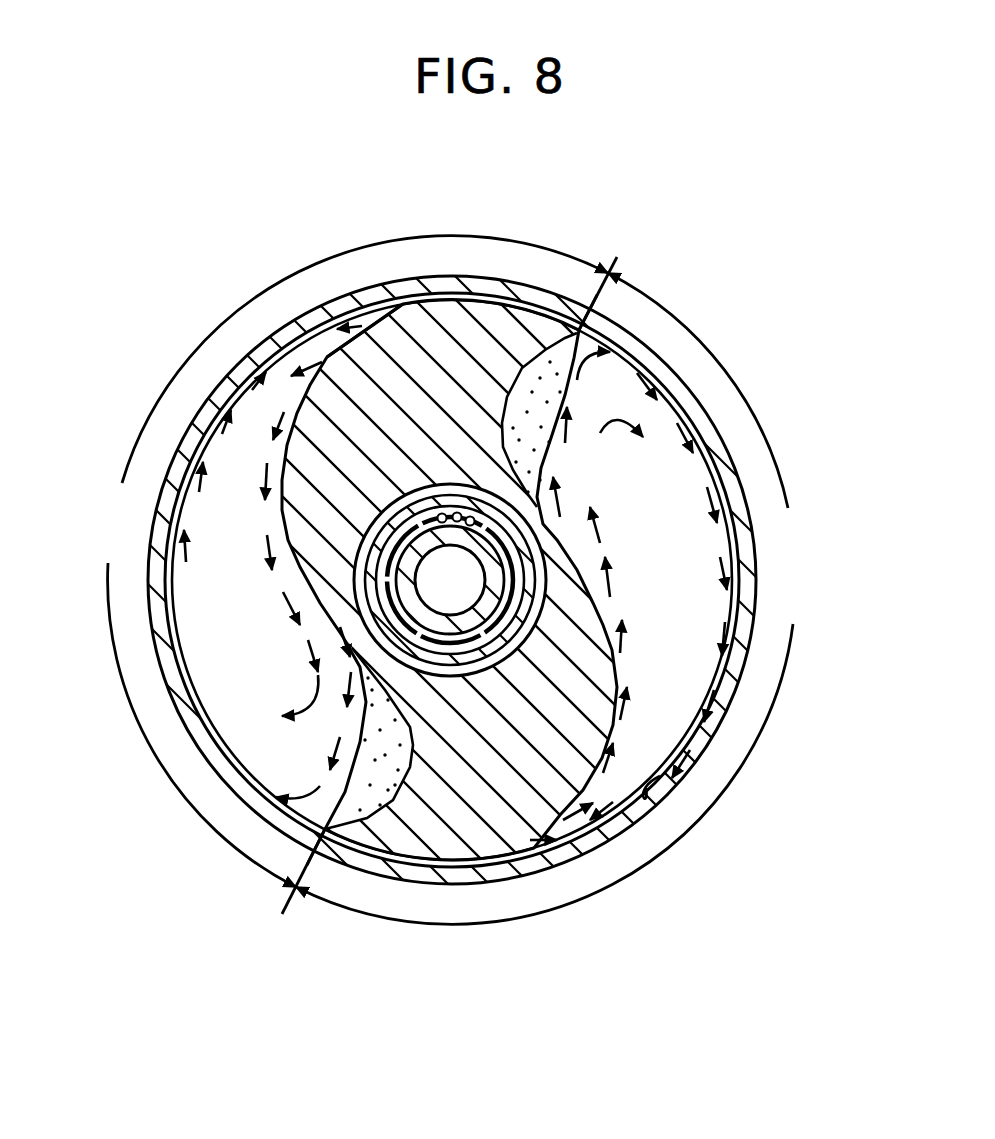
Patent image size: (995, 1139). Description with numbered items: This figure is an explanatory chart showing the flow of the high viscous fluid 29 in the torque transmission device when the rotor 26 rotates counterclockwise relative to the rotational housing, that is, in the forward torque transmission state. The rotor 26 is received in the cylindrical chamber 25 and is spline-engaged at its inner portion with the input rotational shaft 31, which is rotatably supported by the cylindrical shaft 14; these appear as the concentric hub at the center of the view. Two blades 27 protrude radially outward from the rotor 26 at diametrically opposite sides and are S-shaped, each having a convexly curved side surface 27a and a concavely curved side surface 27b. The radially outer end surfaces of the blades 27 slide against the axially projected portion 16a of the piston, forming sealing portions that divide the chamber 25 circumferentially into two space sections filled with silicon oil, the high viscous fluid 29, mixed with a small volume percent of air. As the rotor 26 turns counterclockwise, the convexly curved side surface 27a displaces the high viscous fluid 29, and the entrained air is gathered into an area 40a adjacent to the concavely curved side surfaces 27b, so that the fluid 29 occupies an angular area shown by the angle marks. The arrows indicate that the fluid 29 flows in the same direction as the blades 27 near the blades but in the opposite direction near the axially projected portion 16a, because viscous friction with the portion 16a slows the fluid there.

The cylindrical shaft 14 is at (495, 610).
The axially projected portion 16a is at (685, 389).
The cylindrical chamber 25 is at (657, 803).
The rotor 26 is at (352, 605).
The blades 27 is at (455, 405).
The convexly curved side surface 27a is at (327, 357).
The concavely curved side surface 27b is at (413, 758).
The high viscous fluid 29 is at (672, 667).
The input rotational shaft 31 is at (507, 533).
The area adjacent to the concavely curved side surfaces 40a is at (545, 370).